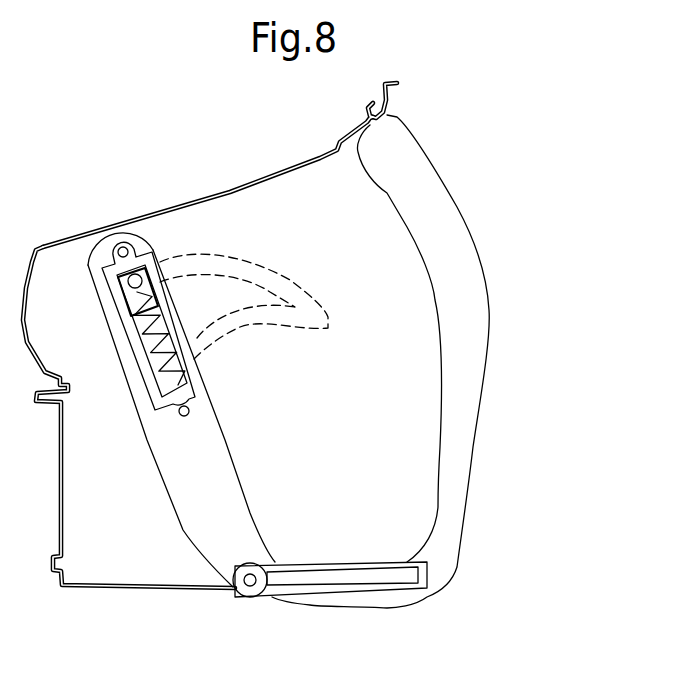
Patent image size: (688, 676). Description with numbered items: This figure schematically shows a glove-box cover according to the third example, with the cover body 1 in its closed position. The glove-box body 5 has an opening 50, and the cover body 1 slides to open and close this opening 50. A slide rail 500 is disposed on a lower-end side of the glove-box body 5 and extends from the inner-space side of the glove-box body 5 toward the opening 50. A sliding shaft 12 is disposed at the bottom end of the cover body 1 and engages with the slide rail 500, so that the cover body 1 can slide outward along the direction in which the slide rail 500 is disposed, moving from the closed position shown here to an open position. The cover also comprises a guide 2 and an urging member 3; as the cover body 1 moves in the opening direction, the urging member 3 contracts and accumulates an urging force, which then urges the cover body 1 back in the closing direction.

The cover body 1 is at (484, 267).
The guide 2 is at (270, 272).
The urging member 3 is at (124, 313).
The glove-box body 5 is at (155, 208).
The sliding shaft 12 is at (250, 580).
The opening 50 is at (372, 403).
The slide rail 500 is at (352, 592).